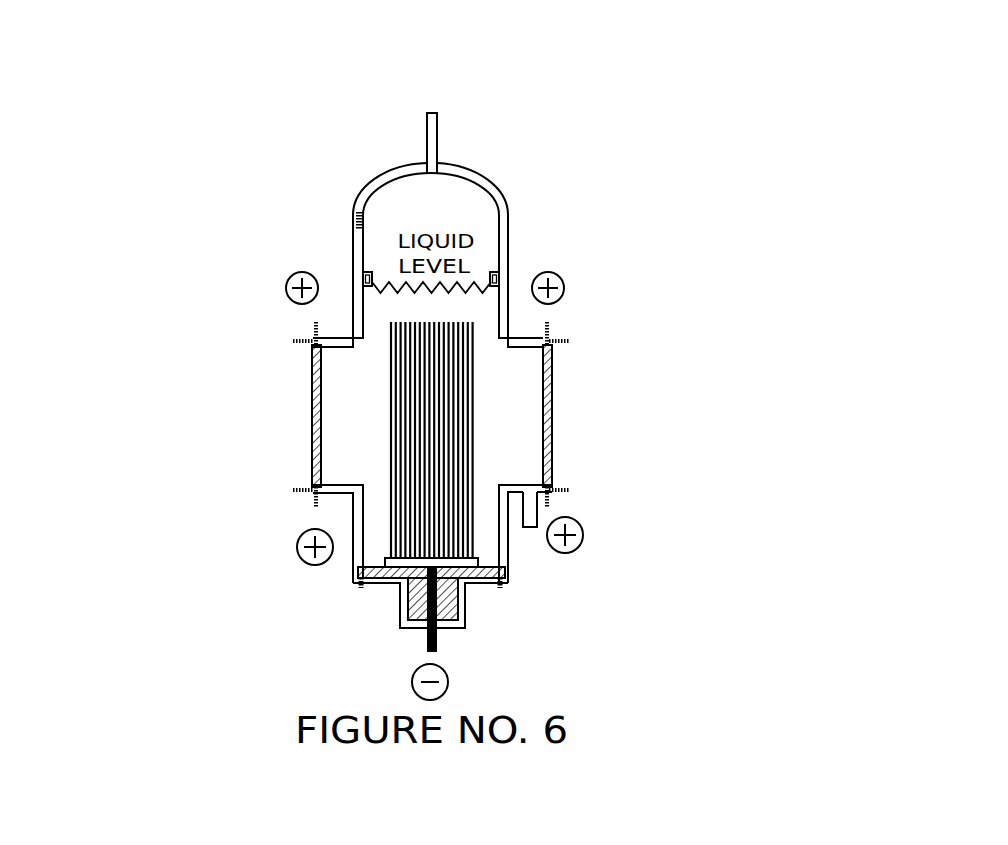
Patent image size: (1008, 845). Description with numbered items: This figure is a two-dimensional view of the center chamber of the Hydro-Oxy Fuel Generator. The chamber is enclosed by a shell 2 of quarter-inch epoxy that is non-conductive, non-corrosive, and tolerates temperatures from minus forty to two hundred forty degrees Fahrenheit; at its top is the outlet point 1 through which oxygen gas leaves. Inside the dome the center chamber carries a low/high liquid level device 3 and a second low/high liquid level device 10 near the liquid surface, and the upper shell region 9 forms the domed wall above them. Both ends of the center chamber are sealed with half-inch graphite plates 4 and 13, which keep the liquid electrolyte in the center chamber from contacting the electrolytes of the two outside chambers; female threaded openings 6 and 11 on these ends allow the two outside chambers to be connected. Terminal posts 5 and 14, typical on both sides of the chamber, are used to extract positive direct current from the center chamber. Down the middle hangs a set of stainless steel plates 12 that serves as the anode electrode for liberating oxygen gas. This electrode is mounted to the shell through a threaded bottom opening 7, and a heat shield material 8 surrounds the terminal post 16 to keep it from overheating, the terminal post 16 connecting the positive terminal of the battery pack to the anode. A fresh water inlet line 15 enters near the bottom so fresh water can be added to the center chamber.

The outlet point for oxygen gas 1 is at (494, 89).
The shell 2 is at (259, 138).
The low/high liquid level device 3 is at (247, 213).
The graphite plate 4 is at (187, 402).
The terminal post 5 is at (198, 286).
The female threaded opening 6 is at (178, 529).
The threaded bottom opening 7 is at (311, 616).
The heat shield material 8 is at (326, 651).
The vessel housing 9 is at (514, 315).
The low/high liquid level device 10 is at (598, 218).
The female threaded opening 11 is at (667, 296).
The set of stainless steel plates 12 is at (548, 444).
The graphite plate 13 is at (674, 416).
The terminal post 14 is at (680, 527).
The fresh water inlet line 15 is at (633, 556).
The terminal post 16 is at (542, 635).